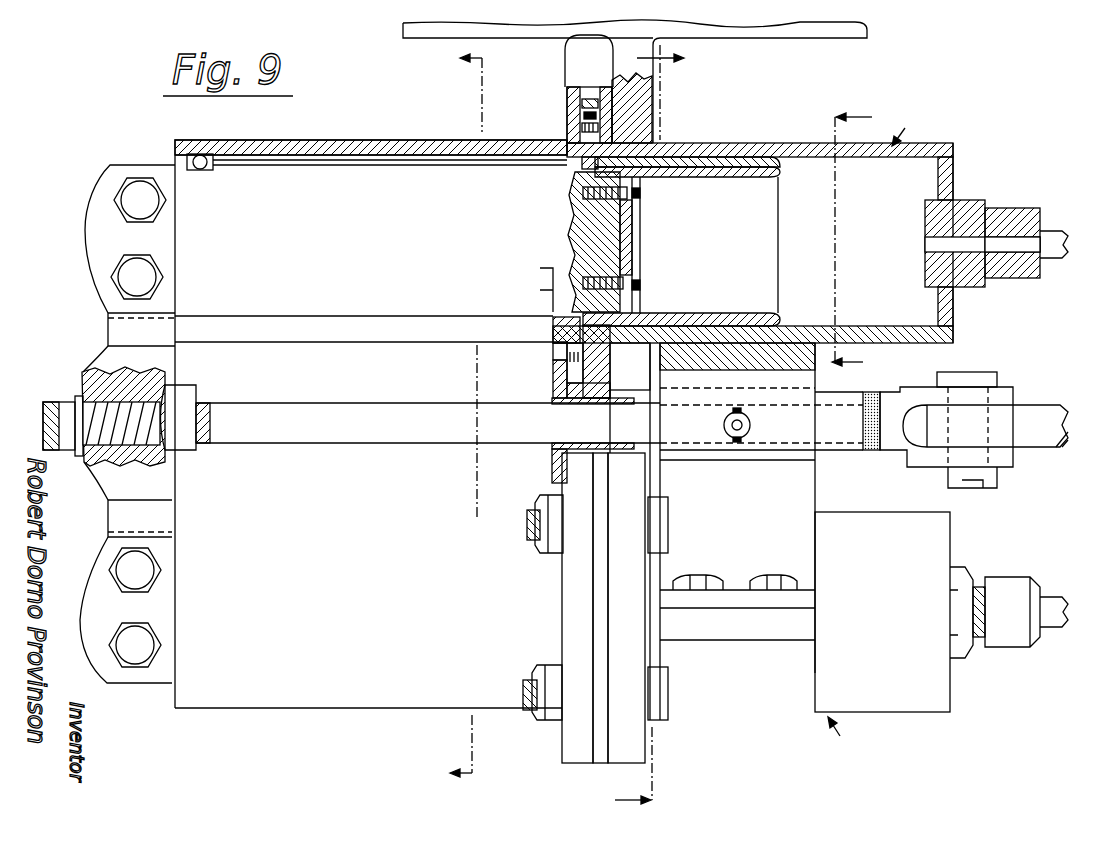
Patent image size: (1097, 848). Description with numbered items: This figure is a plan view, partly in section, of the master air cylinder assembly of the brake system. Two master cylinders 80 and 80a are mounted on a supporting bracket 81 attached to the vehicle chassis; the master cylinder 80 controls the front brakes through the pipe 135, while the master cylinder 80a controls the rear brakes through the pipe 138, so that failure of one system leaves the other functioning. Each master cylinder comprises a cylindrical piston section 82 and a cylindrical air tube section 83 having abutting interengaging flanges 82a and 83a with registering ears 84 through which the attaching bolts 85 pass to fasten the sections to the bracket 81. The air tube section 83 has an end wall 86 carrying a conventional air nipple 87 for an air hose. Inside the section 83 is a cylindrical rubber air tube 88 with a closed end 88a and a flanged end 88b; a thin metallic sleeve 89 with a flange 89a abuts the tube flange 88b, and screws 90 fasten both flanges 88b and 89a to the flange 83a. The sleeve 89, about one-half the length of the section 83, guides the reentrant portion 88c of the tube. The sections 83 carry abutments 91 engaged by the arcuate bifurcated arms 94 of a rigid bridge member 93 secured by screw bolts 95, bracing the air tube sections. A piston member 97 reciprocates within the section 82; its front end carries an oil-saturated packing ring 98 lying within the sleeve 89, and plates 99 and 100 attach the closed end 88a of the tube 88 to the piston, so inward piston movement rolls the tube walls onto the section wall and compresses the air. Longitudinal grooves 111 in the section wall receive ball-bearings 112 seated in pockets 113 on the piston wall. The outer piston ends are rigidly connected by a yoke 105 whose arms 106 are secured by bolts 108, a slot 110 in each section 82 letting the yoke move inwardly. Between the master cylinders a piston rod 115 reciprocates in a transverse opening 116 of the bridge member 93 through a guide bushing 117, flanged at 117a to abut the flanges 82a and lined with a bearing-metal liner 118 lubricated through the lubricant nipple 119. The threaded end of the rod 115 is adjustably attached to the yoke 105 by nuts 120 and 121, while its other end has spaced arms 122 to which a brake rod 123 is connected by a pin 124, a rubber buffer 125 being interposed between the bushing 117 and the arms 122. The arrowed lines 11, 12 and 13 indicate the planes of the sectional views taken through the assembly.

The master cylinder 80 is at (922, 224).
The master cylinder 80a is at (882, 631).
The supporting bracket 81 is at (736, 33).
The piston section 82 is at (312, 150).
The flange 82a is at (580, 87).
The air tube section 83 is at (783, 150).
The flange 83a is at (606, 92).
The registering ears 84 is at (603, 540).
The attaching bolts 85 is at (526, 525).
The end wall 86 is at (948, 172).
The air nipple 87 is at (977, 220).
The rubber air tube 88 is at (770, 198).
The closed end 88a is at (624, 238).
The flanged end 88b is at (583, 108).
The reentrant portion 88c is at (727, 258).
The metallic sleeve 89 is at (721, 178).
The flange 89a is at (588, 140).
The screws 90 is at (585, 121).
The abutment 91 is at (745, 637).
The bridge member 93 is at (793, 478).
The arcuate bifurcated arm 94 is at (798, 540).
The screw bolts 95 is at (770, 586).
The piston member 97 is at (398, 238).
The packing ring 98 is at (554, 294).
The plate 99 is at (641, 255).
The plate 100 is at (640, 290).
The yoke 105 is at (112, 360).
The parallel arm 106 is at (86, 238).
The bolts 108 is at (136, 196).
The slot 110 is at (371, 330).
The longitudinal grooves 111 is at (352, 157).
The ball-bearings 112 is at (198, 172).
The pockets 113 is at (207, 168).
The piston rod 115 is at (366, 445).
The transverse opening 116 is at (711, 461).
The guide bushing 117 is at (641, 395).
The flange 117a is at (553, 380).
The liner 118 is at (576, 404).
The lubricant nipple 119 is at (750, 425).
The nut 120 is at (184, 400).
The nut 121 is at (62, 393).
The spaced arms 122 is at (912, 400).
The brake rod 123 is at (1036, 415).
The pin 124 is at (980, 385).
The rubber buffer 125 is at (870, 455).
The pipe 135 is at (1058, 231).
The pipe 138 is at (1054, 614).
The rear brake 11 is at (652, 429).
The section line 12 is at (482, 427).
The section line 13 is at (862, 232).